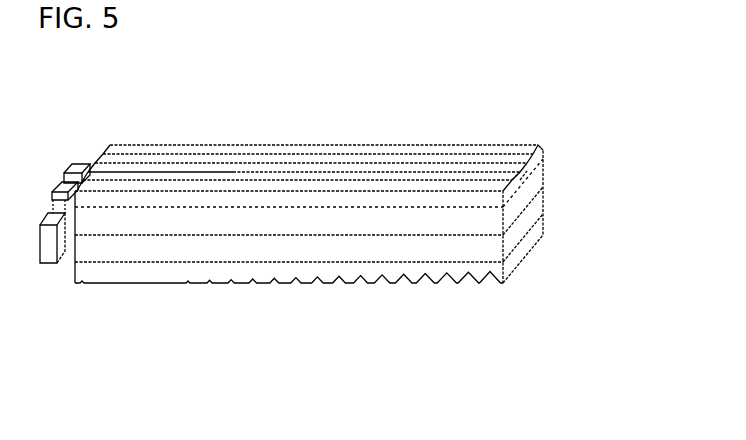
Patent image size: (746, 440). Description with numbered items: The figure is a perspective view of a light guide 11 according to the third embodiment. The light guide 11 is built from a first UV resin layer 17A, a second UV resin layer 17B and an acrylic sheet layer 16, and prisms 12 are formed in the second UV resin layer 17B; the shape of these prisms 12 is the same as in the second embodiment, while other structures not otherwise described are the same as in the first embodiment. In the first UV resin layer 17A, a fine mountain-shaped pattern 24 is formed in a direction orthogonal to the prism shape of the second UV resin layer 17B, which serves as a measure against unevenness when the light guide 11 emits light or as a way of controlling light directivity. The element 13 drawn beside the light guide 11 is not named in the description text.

The light guide laminate 11 is at (380, 181).
The serrated prism portion 12 is at (425, 274).
The light source 13 is at (40, 258).
The core layer 16 is at (542, 186).
The first cladding layer 17A is at (538, 160).
The second cladding layer 17B is at (545, 203).
The reflective layer 24 is at (353, 124).